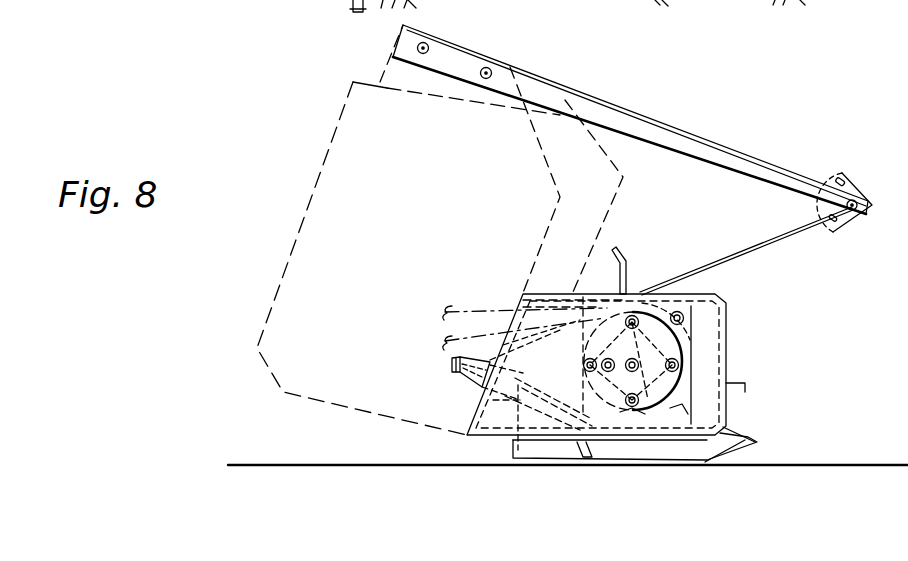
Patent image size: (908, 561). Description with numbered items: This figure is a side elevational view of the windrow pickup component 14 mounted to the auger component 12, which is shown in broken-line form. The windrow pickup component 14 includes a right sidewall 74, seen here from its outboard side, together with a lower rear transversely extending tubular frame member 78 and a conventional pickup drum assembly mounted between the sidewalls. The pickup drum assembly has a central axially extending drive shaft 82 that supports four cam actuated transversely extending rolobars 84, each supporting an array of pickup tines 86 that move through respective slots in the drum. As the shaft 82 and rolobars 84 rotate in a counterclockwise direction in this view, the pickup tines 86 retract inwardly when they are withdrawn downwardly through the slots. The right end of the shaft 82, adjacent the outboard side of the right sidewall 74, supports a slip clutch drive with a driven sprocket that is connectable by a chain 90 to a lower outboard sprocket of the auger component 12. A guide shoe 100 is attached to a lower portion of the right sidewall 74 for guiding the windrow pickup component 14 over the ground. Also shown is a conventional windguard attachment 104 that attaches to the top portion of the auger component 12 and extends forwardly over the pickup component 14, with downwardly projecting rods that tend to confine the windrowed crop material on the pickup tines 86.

The auger component 12 is at (420, 200).
The windrow pickup component 14 is at (748, 340).
The right sidewall 74 is at (723, 310).
The lower rear transversely extending tubular frame member 78 is at (510, 380).
The drive shaft 82 is at (652, 400).
The rolobars 84 is at (680, 358).
The pickup tines 86 is at (633, 243).
The chain 90 is at (490, 310).
The guide shoe 100 is at (752, 440).
The windguard attachment 104 is at (721, 143).